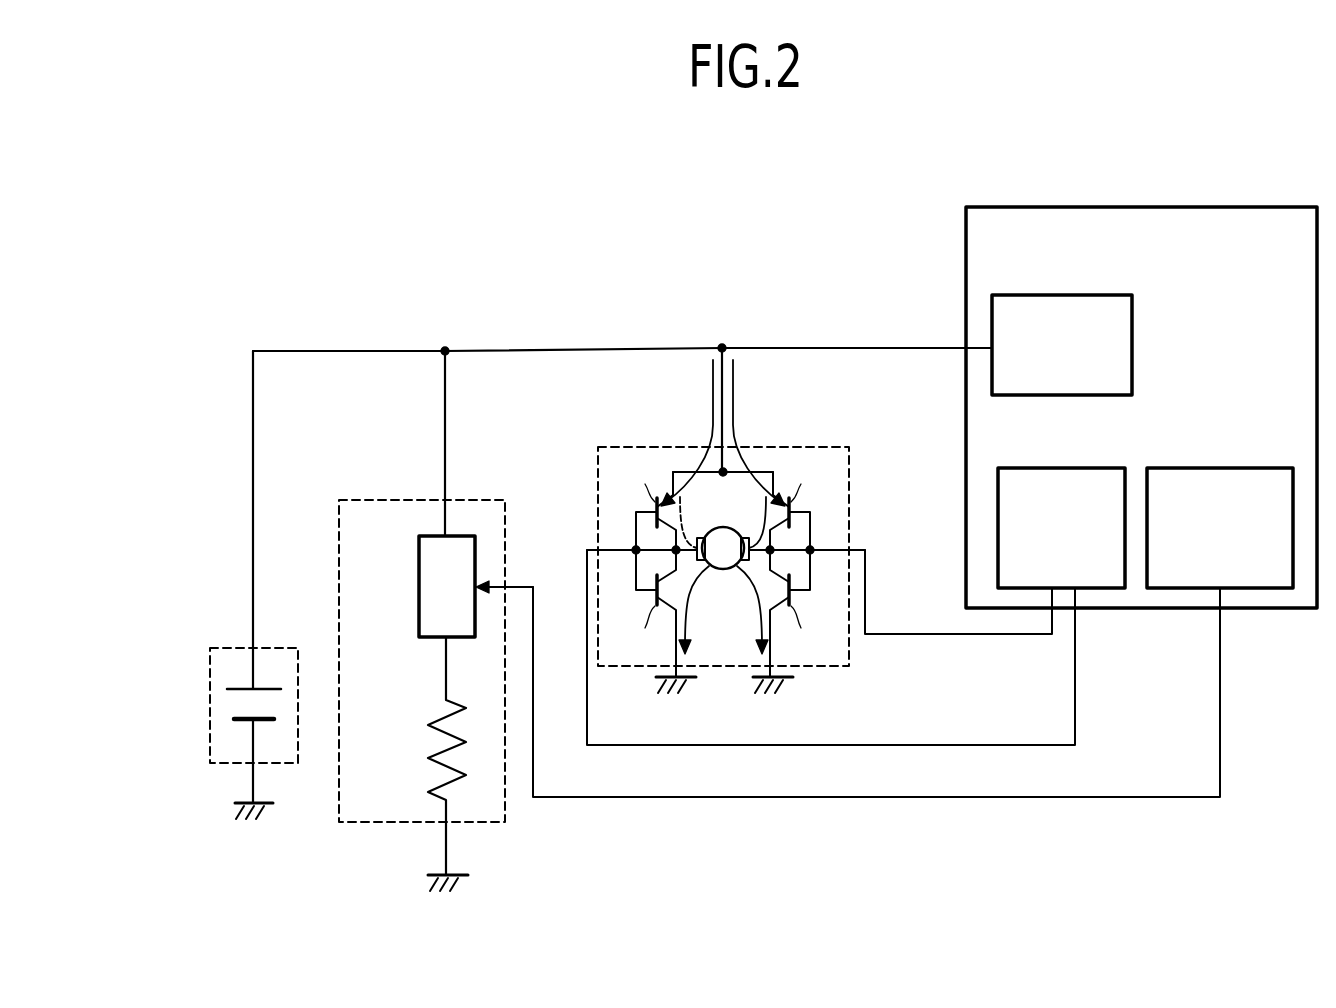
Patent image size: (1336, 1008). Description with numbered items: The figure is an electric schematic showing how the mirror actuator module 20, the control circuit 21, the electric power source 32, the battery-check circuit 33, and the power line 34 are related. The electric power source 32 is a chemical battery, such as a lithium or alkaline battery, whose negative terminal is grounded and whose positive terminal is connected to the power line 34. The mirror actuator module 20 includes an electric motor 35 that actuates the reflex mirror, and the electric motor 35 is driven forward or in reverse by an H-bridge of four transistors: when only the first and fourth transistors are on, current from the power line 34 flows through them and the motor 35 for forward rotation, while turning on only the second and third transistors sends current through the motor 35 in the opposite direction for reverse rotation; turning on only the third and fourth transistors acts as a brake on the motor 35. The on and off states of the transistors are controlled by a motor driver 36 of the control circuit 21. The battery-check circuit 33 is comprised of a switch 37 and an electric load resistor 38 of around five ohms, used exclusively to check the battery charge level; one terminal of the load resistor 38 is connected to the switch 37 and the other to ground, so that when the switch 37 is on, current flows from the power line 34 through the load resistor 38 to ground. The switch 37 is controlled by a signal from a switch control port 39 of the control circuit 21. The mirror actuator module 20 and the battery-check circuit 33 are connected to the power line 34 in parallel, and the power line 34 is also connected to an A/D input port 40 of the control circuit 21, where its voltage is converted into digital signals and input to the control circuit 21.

The mirror actuator module 20 is at (733, 543).
The control circuit 21 is at (1106, 407).
The electric power source 32 is at (225, 648).
The battery-check circuit 33 is at (436, 621).
The power line 34 is at (348, 351).
The electric motor 35 is at (723, 570).
The motor driver 36 is at (1104, 468).
The switch 37 is at (419, 589).
The electric load resistor 38 is at (437, 714).
The switch control port 39 is at (1265, 468).
The A/D input port 40 is at (1132, 322).